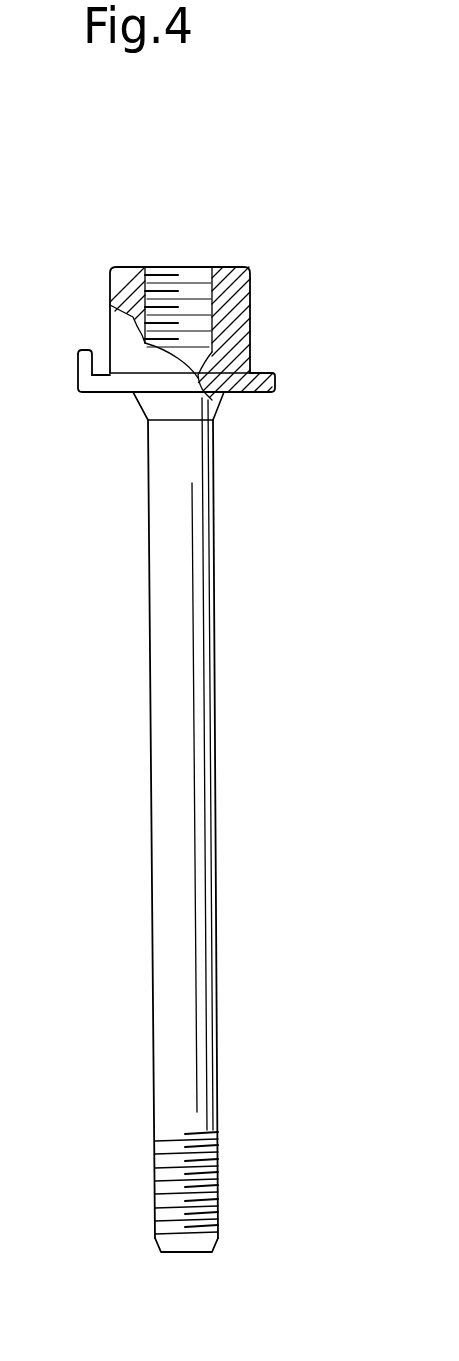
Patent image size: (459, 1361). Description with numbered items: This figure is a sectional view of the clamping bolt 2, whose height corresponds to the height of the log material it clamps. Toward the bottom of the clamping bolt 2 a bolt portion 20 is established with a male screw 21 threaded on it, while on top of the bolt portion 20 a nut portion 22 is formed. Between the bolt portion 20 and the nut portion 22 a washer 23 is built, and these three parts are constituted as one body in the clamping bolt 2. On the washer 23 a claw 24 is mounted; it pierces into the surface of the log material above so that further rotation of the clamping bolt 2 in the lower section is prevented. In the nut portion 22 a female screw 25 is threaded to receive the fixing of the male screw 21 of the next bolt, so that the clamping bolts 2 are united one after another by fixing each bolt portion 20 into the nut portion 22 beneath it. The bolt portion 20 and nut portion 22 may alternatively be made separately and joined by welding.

The clamping bolt 2 is at (176, 729).
The bolt portion 20 is at (165, 633).
The male screw 21 is at (187, 1180).
The nut portion 22 is at (249, 306).
The washer 23 is at (264, 381).
The claw 24 is at (79, 362).
The female screw 25 is at (195, 280).